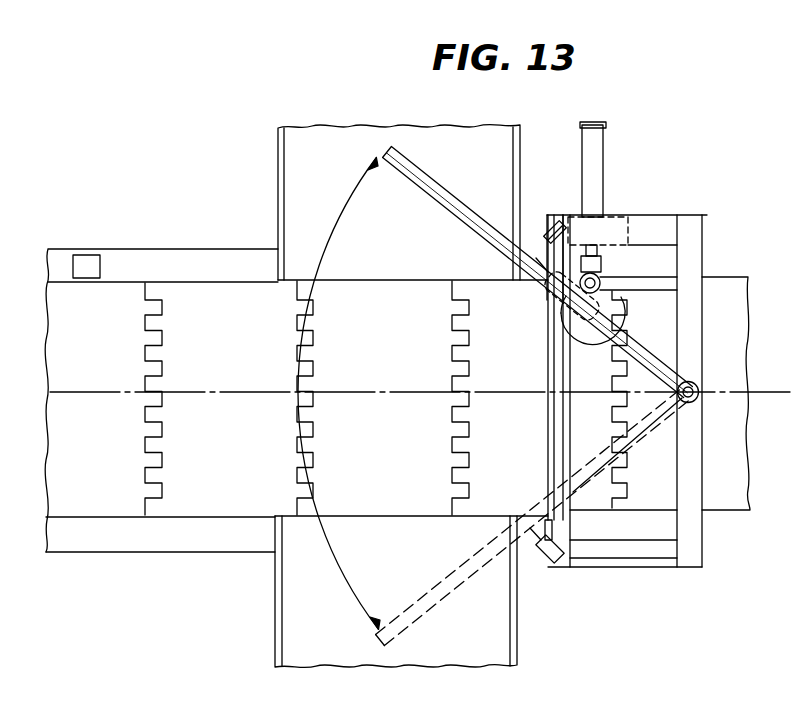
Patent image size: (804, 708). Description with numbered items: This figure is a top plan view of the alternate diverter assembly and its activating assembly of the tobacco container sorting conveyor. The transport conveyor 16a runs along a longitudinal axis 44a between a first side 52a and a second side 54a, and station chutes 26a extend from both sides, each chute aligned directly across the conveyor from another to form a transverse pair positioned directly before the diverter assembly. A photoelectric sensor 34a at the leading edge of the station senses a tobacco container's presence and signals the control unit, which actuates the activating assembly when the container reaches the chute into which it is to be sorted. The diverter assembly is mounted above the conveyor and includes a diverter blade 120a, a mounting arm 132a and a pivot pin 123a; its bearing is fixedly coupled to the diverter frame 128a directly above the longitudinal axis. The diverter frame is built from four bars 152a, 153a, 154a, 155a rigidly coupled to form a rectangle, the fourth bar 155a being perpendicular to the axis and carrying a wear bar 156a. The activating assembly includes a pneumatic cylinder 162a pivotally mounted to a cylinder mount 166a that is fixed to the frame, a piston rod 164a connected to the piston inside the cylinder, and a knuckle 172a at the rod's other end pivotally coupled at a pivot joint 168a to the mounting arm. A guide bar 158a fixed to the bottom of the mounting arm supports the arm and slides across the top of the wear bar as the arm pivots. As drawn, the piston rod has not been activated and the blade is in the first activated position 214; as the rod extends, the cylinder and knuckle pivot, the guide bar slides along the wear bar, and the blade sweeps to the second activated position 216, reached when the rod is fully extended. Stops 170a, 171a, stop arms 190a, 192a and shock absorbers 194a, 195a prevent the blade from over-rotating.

The transport conveyor 16a is at (247, 537).
The station chute 26a is at (278, 168).
The photoelectric sensor 34a is at (87, 255).
The longitudinal axis 44a is at (200, 391).
The first side 52a is at (134, 556).
The second side 54a is at (172, 247).
The diverter blade 120a is at (386, 163).
The pivot pin 123a is at (700, 390).
The diverter frame 128a is at (617, 568).
The mounting arm 132a is at (703, 292).
The first bar 152a is at (646, 215).
The second bar 153a is at (703, 315).
The third bar 154a is at (640, 568).
The fourth bar 155a is at (553, 400).
The wear bar 156a is at (585, 340).
The guide bar 158a is at (560, 300).
The pneumatic cylinder 162a is at (603, 150).
The piston rod 164a is at (600, 248).
The cylinder mount 166a is at (563, 216).
The pivot joint 168a is at (650, 305).
The stop 170a is at (538, 538).
The stop 171a is at (540, 265).
The knuckle 172a is at (588, 345).
The stop arm 190a is at (560, 553).
The stop arm 192a is at (548, 222).
The shock absorber 194a is at (552, 526).
The shock absorber 195a is at (548, 235).
The first activated position 214 is at (443, 182).
The second activated position 216 is at (432, 620).